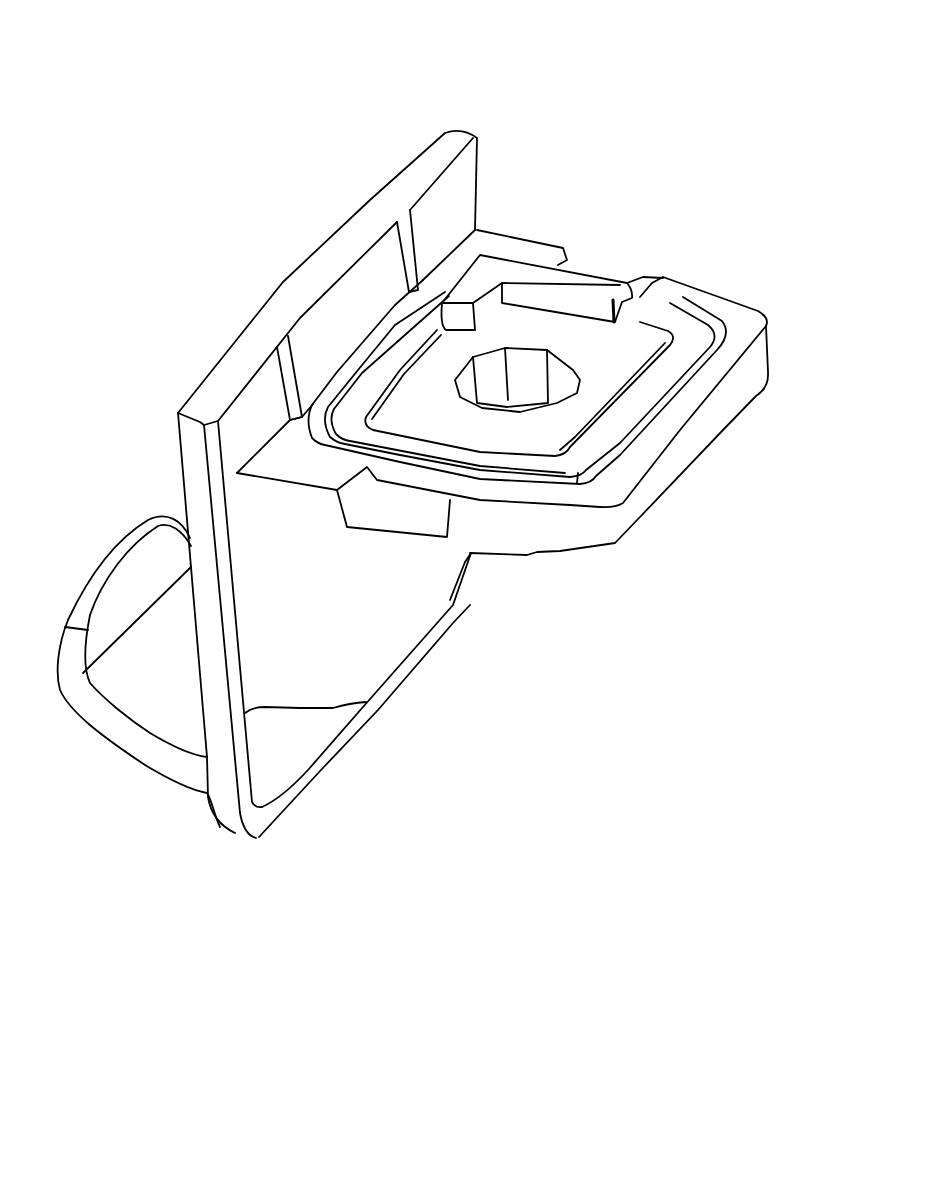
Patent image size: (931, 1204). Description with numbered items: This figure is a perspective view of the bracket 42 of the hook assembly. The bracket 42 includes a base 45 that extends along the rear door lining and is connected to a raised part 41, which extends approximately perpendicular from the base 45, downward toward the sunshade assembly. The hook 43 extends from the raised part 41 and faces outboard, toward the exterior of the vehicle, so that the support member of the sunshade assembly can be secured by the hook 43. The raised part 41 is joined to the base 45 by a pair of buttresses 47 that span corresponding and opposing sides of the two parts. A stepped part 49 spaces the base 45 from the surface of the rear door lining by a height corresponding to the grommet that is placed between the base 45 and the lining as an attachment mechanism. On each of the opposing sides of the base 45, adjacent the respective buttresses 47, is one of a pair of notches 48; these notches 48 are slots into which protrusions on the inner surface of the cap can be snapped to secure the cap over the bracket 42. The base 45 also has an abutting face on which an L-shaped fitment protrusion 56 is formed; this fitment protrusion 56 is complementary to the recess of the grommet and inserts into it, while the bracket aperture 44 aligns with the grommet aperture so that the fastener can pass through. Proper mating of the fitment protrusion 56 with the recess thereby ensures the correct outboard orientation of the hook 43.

The raised part 41 is at (273, 760).
The bracket 42 is at (332, 186).
The hook 43 is at (115, 543).
The bracket aperture 44 is at (583, 366).
The base 45 is at (717, 420).
The buttresses 47 is at (422, 588).
The notches 48 is at (650, 280).
The stepped part 49 is at (453, 197).
The fitment protrusion 56 is at (577, 278).